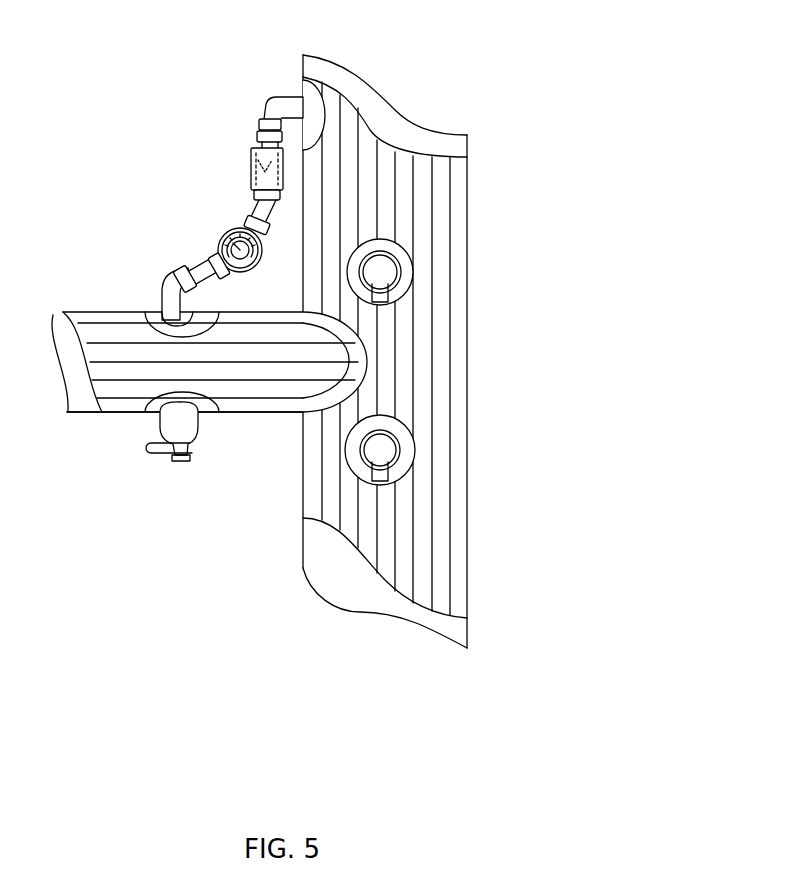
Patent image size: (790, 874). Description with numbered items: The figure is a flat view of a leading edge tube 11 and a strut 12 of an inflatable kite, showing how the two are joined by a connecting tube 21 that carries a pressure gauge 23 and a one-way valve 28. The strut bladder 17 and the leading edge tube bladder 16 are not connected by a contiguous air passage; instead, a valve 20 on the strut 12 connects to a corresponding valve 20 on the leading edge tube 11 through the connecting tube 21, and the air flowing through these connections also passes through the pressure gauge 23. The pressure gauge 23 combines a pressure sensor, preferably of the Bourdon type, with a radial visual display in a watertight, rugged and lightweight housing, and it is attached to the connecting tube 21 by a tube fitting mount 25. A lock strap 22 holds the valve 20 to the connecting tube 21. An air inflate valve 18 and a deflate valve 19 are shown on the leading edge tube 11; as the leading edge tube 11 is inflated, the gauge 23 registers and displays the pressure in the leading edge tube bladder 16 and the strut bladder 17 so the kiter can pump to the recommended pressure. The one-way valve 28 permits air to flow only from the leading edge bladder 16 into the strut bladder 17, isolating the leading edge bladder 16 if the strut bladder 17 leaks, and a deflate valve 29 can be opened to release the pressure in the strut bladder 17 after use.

The leading edge tube 11 is at (442, 207).
The strut 12 is at (115, 392).
The leading edge tube bladder 16 is at (390, 127).
The strut bladder 17 is at (67, 337).
The air inflate valve 18 is at (385, 273).
The deflate valve 19 is at (380, 450).
The valve 20 is at (302, 104).
The connecting tube 21 is at (210, 270).
The lock strap 22 is at (257, 123).
The pressure gauge 23 is at (230, 223).
The tube fitting mount 25 is at (262, 240).
The one-way valve 28 is at (250, 165).
The deflate valve 29 is at (180, 425).